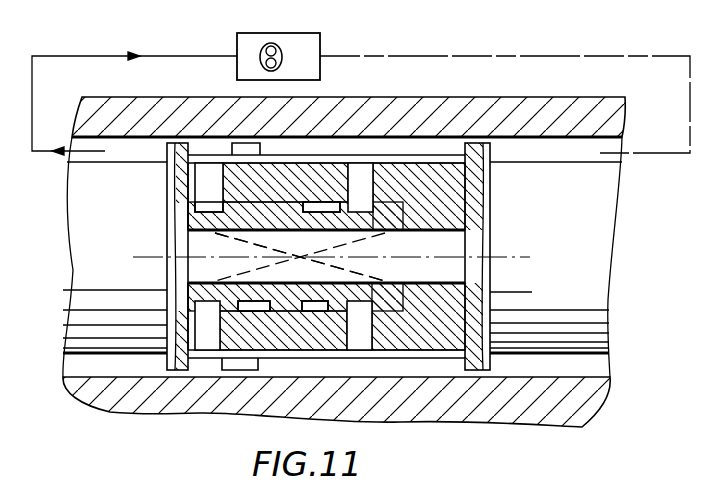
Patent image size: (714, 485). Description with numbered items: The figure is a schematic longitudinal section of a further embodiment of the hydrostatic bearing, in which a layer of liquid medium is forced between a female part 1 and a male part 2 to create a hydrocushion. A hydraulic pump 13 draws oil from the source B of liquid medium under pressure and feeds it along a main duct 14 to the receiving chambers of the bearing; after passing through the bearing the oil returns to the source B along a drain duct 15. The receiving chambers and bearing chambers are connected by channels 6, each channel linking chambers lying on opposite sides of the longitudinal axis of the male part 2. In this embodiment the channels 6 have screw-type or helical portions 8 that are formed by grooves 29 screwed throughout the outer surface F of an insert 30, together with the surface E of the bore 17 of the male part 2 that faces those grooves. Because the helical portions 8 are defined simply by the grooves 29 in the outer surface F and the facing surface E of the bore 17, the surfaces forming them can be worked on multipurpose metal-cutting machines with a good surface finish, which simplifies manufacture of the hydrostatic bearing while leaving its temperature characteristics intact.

The female part 1 is at (612, 110).
The male part 2 is at (600, 246).
The channels 6 is at (205, 180).
The screw-type portions 8 is at (243, 243).
The hydraulic pump 13 is at (270, 43).
The main duct 14 is at (73, 55).
The drain duct 15 is at (484, 56).
The bore 17 is at (177, 303).
The grooves 29 is at (320, 304).
The insert 30 is at (391, 305).
The source of liquid medium under pressure B is at (305, 47).
The surface of the bore E is at (284, 208).
The outer surface of the insert F is at (300, 204).